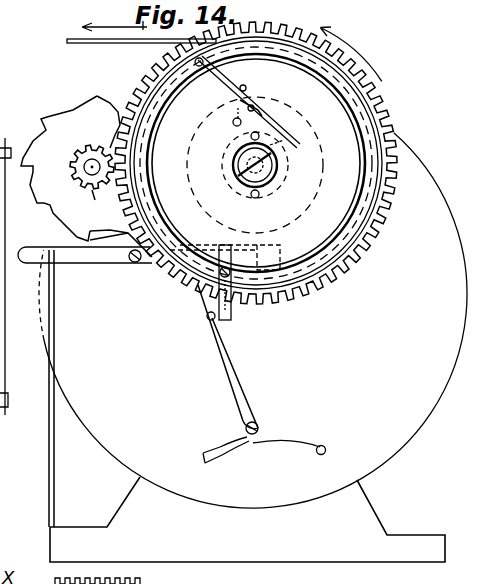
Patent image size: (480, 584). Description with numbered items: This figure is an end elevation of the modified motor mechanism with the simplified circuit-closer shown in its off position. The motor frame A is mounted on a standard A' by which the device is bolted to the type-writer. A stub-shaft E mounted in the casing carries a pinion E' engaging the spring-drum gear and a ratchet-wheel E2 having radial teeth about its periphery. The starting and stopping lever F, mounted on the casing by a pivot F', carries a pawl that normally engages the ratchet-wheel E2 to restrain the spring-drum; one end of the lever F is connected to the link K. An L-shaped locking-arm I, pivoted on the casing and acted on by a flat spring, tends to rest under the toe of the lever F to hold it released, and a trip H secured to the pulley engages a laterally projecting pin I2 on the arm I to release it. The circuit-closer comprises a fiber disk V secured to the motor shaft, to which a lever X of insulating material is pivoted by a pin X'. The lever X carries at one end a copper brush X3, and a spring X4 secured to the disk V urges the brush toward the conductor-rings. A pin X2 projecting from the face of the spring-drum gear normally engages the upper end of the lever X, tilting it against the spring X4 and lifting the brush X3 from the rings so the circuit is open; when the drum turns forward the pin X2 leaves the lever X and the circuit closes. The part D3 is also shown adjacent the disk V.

The motor frame A is at (253, 320).
The standard A' is at (247, 519).
The link K is at (49, 468).
The lever F is at (121, 263).
The pivot F' is at (85, 270).
The stub-shaft E is at (89, 191).
The pinion E' is at (76, 175).
The ratchet-wheel E2 is at (70, 168).
The disk V is at (312, 192).
The lever X is at (247, 102).
The pin X2 is at (247, 89).
The pin X' is at (277, 103).
The copper brush X3 is at (281, 131).
The spring X4 is at (245, 100).
The disk D3 is at (306, 132).
The trip H is at (232, 318).
The locking-arm I is at (243, 378).
The pin I2 is at (208, 320).